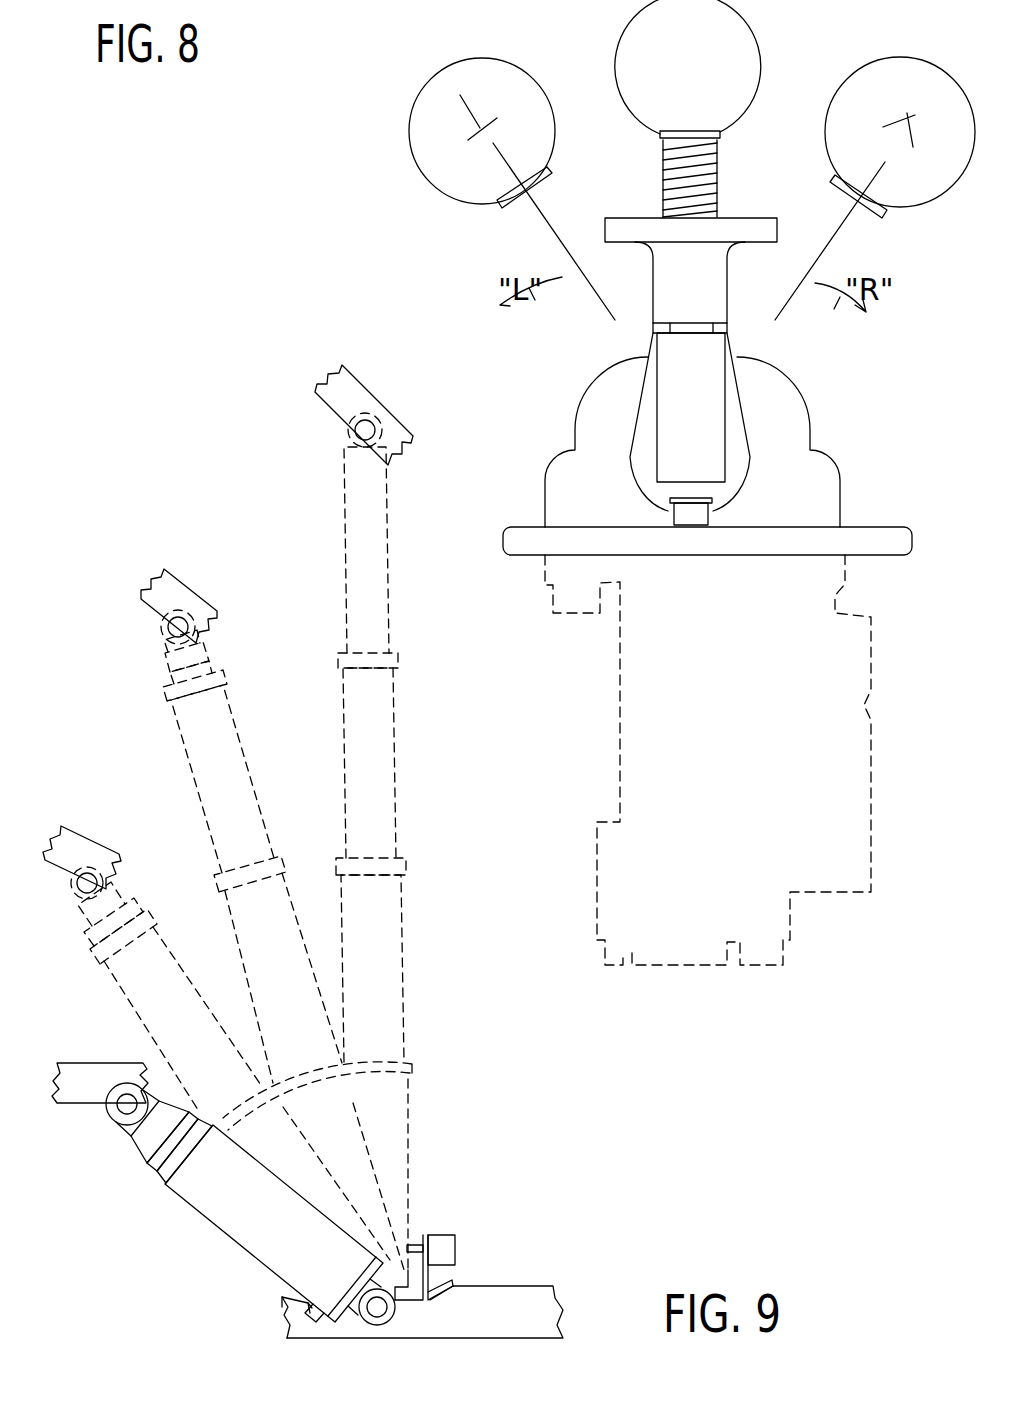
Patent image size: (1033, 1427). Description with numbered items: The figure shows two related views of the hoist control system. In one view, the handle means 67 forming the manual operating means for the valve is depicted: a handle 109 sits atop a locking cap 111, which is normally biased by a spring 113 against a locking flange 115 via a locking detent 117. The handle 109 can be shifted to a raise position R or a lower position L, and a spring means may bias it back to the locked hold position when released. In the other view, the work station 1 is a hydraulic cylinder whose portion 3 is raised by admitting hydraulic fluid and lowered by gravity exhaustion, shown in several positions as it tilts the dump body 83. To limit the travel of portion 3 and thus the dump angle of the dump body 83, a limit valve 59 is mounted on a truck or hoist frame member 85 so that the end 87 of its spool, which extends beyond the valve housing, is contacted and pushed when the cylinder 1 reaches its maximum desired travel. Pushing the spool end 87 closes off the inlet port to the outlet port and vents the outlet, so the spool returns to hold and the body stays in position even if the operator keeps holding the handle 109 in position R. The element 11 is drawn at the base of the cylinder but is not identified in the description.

In FIG. 8, the work station 1 is at (222, 1228).
In FIG. 8, the portion 3 is at (395, 557).
In FIG. 8, the support block 11 is at (287, 1299).
In FIG. 8, the limit valve 59 is at (456, 1240).
In FIG. 9, the handle means 67 is at (788, 368).
In FIG. 8, the dump body 83 is at (122, 1063).
In FIG. 8, the truck or hoist frame member 85 is at (517, 1287).
In FIG. 8, the end of limit valve spool 87 is at (410, 1247).
In FIG. 9, the handle 109 is at (503, 58).
In FIG. 9, the locking cap 111 is at (728, 285).
In FIG. 9, the spring 113 is at (710, 182).
In FIG. 9, the locking flange 115 is at (708, 520).
In FIG. 9, the locking detent 117 is at (697, 497).